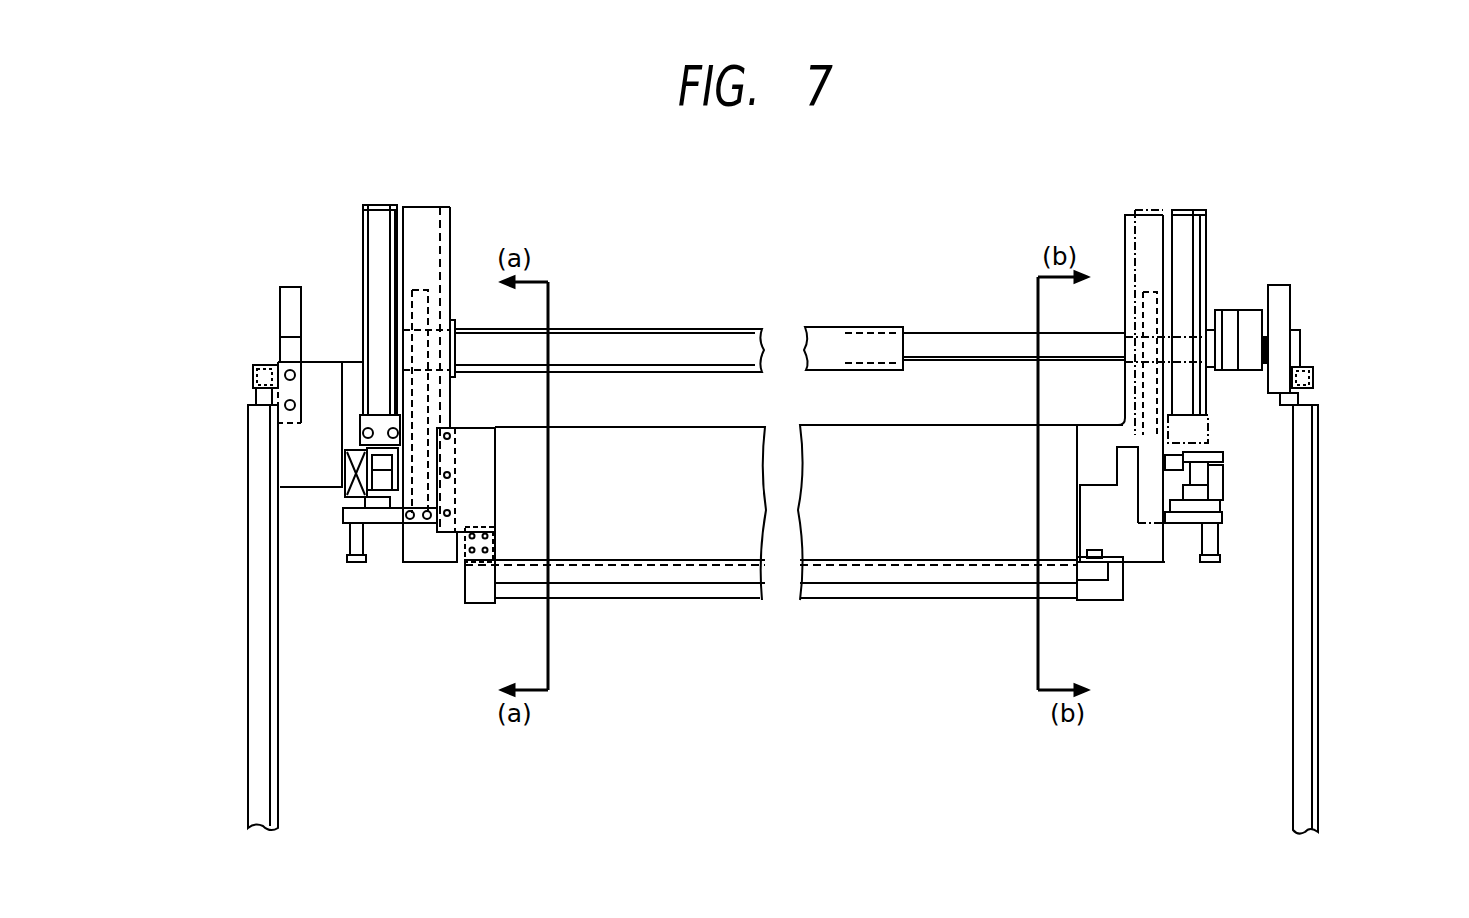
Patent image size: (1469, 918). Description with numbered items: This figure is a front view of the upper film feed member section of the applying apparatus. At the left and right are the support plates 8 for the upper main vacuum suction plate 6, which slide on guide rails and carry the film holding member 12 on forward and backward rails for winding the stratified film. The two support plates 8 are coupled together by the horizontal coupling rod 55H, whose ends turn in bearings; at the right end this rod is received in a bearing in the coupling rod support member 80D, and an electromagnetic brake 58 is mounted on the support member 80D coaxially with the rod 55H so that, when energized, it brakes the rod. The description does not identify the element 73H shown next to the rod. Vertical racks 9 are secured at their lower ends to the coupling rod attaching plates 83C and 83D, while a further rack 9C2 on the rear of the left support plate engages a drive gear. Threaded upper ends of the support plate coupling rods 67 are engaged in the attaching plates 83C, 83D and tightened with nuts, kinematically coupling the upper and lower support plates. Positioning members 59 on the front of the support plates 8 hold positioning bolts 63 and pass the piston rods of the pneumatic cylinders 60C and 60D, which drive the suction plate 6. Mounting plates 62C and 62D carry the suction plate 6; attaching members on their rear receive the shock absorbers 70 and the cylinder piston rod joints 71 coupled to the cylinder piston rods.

The rack 9 is at (292, 295).
The rack 9C2 is at (287, 347).
The support plate 8 is at (300, 480).
The coupling rod attaching plate 83C is at (252, 378).
The coupling rod attaching plate 83D is at (1316, 378).
The support plate coupling rod 67 is at (268, 660).
The pneumatic cylinder 60C is at (383, 230).
The mounting plate 62C is at (446, 230).
The positioning bolt 63 is at (390, 468).
The positioning member 59 is at (345, 458).
The cylinder piston rod joint 71 is at (380, 492).
The shock absorber 70 is at (355, 565).
The shaft 73H is at (640, 347).
The coupling rod 55H is at (975, 347).
The main vacuum suction plate 6 is at (800, 530).
The film holding member 12 is at (640, 575).
The mounting plate 62D is at (1128, 233).
The pneumatic cylinder 60D is at (1190, 235).
The electromagnetic brake 58 is at (1228, 312).
The coupling rod support member 80D is at (1250, 317).